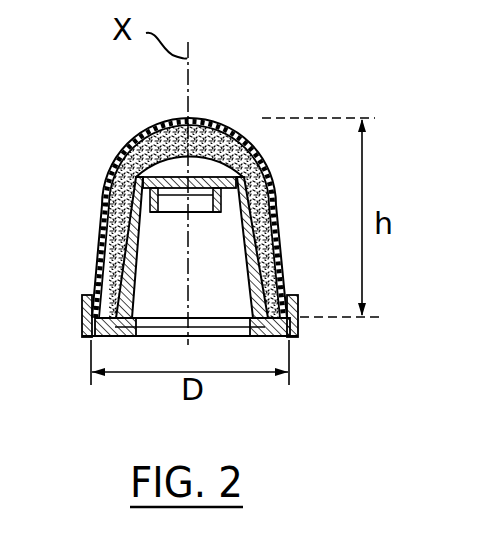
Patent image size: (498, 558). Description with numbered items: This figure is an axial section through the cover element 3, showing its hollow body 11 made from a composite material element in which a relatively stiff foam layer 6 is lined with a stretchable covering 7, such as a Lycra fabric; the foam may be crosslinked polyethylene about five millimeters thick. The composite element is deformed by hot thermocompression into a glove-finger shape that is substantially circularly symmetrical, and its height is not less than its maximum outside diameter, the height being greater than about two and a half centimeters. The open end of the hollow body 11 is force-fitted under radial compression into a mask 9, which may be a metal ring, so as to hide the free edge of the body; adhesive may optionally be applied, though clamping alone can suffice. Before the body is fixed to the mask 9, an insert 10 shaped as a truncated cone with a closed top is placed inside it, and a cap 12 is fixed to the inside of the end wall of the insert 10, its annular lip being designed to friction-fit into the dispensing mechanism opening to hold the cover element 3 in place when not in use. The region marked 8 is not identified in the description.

The cover element 3 is at (237, 110).
The foam layer 6 is at (100, 258).
The stretchable covering 7 is at (103, 190).
The foam layer 8 is at (271, 157).
The mask 9 is at (298, 333).
The insert 10 is at (244, 280).
The hollow body 11 is at (163, 187).
The cap 12 is at (181, 212).